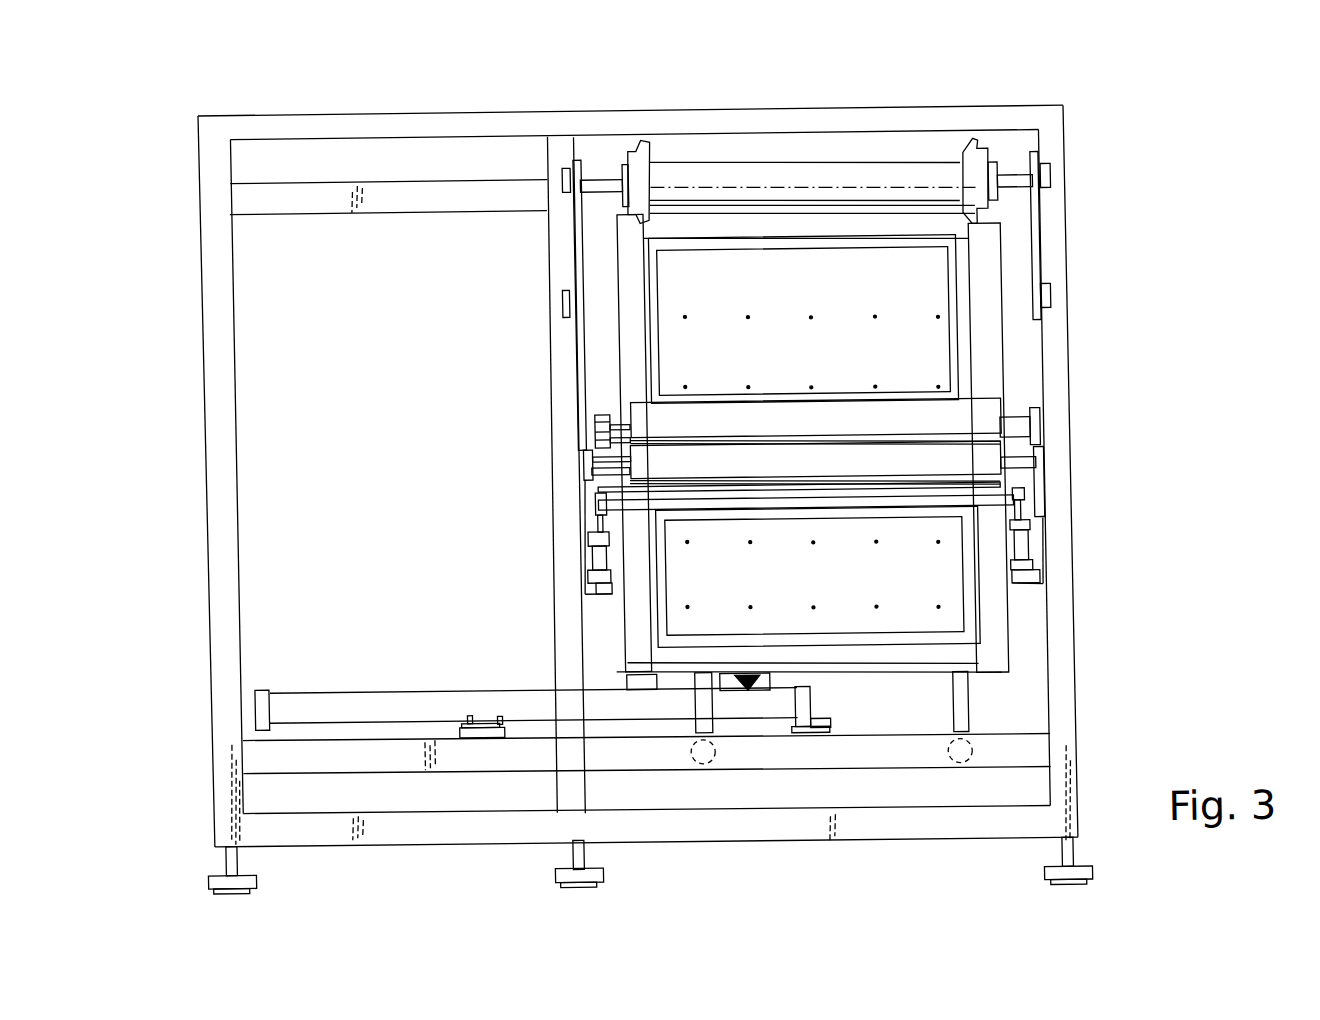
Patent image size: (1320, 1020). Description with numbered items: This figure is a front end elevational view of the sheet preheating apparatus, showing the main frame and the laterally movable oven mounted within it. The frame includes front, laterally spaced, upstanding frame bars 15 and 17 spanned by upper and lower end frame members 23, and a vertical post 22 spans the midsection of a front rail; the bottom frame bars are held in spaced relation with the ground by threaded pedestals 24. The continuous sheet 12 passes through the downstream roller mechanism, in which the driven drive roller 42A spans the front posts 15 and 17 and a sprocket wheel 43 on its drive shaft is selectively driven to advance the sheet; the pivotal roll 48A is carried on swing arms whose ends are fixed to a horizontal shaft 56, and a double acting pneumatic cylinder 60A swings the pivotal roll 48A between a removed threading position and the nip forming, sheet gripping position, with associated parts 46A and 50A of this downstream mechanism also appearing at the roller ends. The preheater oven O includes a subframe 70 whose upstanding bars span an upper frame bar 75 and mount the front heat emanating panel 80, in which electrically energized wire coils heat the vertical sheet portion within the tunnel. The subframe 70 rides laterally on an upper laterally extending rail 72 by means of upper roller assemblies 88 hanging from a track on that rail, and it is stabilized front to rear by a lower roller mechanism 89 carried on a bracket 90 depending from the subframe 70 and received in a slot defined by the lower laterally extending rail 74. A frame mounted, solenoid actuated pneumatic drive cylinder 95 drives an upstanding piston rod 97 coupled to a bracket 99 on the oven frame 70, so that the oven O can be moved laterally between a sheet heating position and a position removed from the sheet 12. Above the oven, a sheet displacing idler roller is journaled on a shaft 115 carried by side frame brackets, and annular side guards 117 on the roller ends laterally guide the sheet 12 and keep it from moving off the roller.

The upper end frame member 23 is at (332, 132).
The front upstanding frame bar 17 is at (209, 345).
The front upstanding frame bar 15 is at (1063, 228).
The upper laterally extending rail 72 is at (421, 201).
The lower laterally extending rail 74 is at (375, 764).
The pneumatic drive cylinder 95 is at (397, 713).
The threaded pedestal 24 is at (584, 882).
The upper frame bar of subframe 75 is at (726, 235).
The upper roller assembly 88 is at (695, 219).
The side guard 117 is at (979, 182).
The shaft 115 is at (1006, 190).
The oven subframe 70 is at (621, 333).
The front heat emanating panel 80 is at (766, 308).
The preheater oven O is at (1006, 353).
The drive roller 42A is at (954, 430).
The sheet 12 is at (782, 449).
The pivotal roll 48A is at (883, 476).
The horizontal shaft 56 is at (676, 511).
The sprocket wheel 43 is at (586, 427).
The vertical post 22 is at (558, 515).
The right upper bracket 46A is at (1032, 434).
The right lower bracket 50A is at (1018, 475).
The pneumatic cylinder 60A is at (590, 558).
The piston rod 97 is at (734, 690).
The bracket 99 is at (749, 692).
The bracket 90 is at (934, 711).
The lower roller mechanism 89 is at (696, 753).